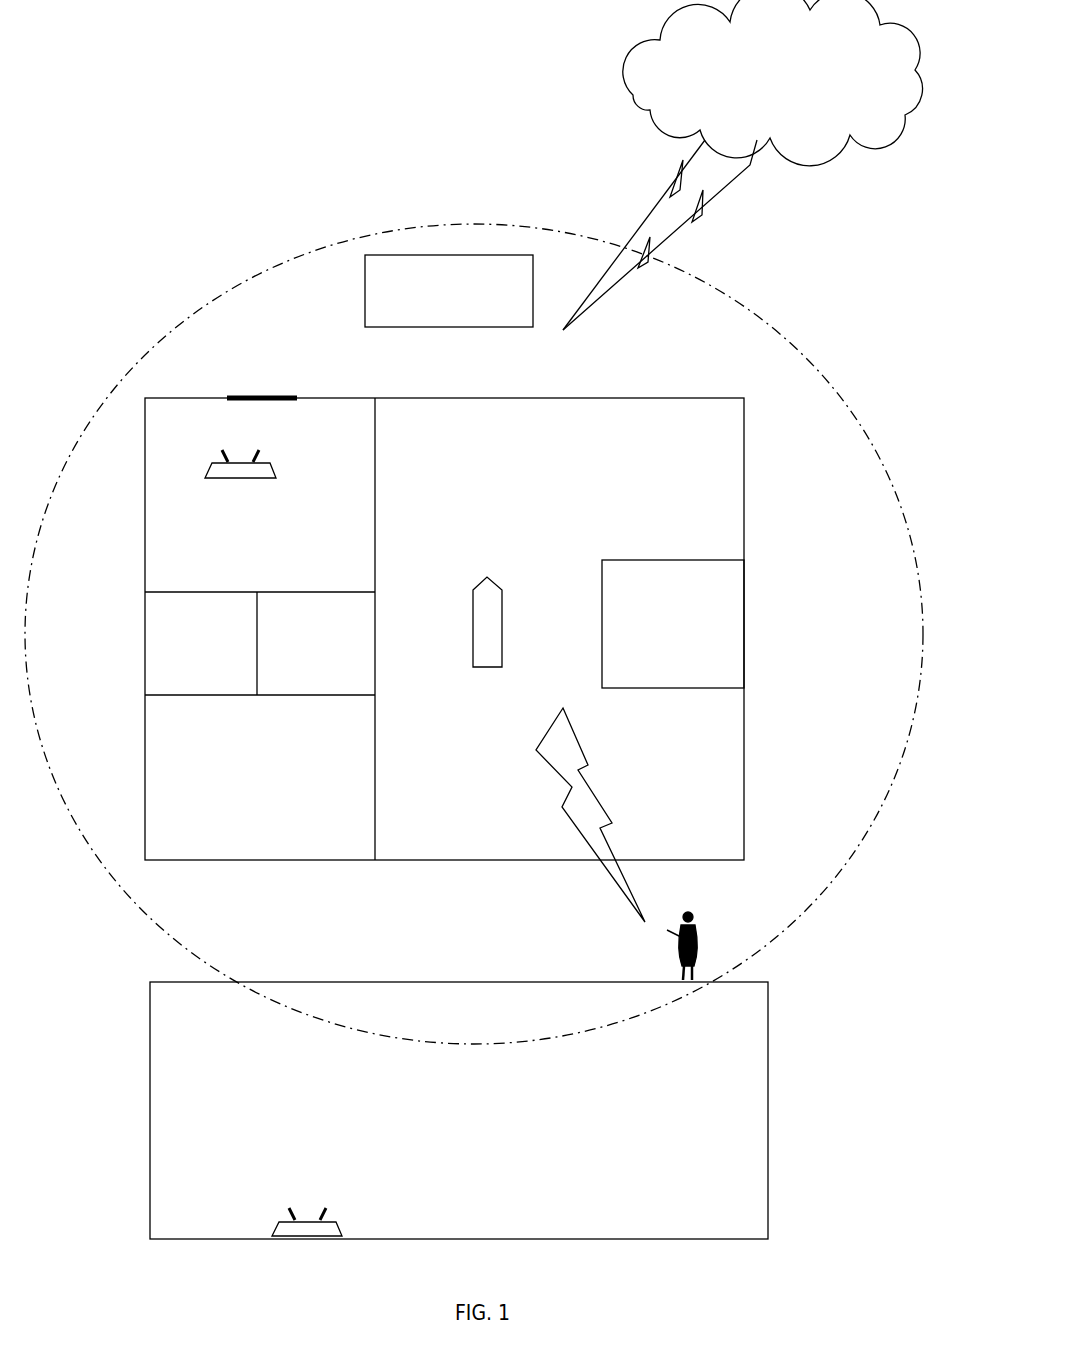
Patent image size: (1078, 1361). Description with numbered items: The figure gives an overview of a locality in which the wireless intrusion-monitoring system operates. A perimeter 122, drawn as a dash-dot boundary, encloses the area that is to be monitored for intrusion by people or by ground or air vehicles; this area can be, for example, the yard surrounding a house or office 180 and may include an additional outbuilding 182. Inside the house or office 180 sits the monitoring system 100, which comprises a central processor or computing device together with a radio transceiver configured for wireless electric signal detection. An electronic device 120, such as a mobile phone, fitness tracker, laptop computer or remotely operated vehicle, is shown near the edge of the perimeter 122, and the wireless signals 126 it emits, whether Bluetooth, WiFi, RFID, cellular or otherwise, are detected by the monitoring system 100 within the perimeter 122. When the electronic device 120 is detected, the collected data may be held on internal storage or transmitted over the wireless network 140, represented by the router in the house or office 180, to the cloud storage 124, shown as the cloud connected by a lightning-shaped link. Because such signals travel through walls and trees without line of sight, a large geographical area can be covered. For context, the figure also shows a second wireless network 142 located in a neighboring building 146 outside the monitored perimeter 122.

The monitoring system 100 is at (513, 607).
The electronic device 120 is at (722, 947).
The perimeter 122 is at (160, 330).
The cloud storage 124 is at (628, 73).
The wireless signals 126 is at (602, 756).
The wireless network 140 is at (238, 446).
The second wireless network 142 is at (258, 1221).
The building 146 is at (772, 1221).
The house or office 180 is at (140, 645).
The outbuilding 182 is at (473, 245).